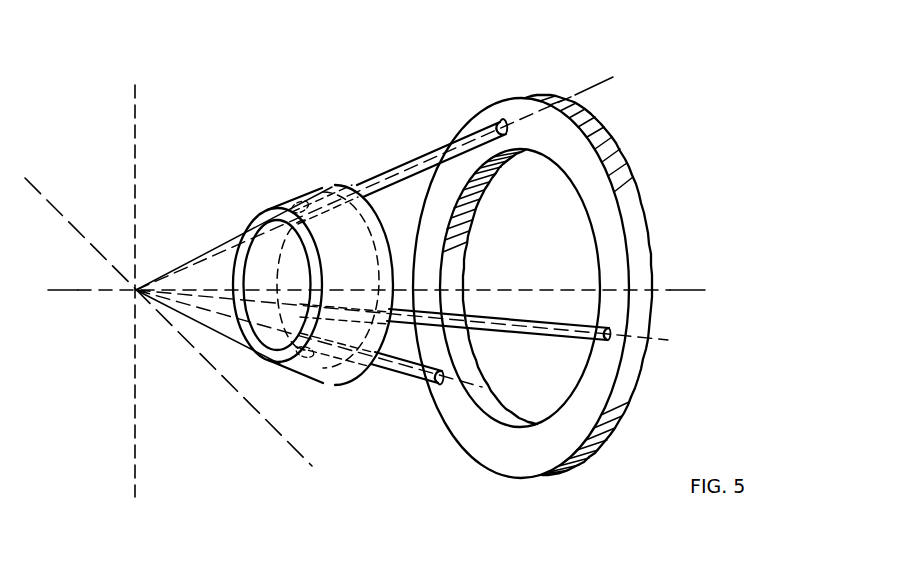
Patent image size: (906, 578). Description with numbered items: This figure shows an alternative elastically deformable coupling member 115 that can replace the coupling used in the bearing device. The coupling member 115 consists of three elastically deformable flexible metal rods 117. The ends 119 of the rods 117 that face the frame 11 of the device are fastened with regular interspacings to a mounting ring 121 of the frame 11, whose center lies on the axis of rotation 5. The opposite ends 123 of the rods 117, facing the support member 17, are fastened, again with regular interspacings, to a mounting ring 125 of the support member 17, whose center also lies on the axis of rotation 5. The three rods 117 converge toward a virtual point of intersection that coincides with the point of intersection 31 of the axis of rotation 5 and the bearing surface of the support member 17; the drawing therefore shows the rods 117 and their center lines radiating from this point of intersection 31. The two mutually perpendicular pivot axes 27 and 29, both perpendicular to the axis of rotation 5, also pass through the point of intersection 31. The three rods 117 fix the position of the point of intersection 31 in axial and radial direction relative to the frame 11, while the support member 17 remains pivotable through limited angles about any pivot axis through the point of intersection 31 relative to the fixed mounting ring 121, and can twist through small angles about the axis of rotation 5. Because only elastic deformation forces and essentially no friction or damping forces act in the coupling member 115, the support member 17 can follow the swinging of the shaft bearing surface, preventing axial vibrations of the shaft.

The axis of rotation 5 is at (78, 287).
The frame 11 is at (627, 200).
The support member 17 is at (243, 230).
The pivot axis 27 is at (138, 120).
The pivot axis 29 is at (67, 214).
The point of intersection 31 is at (134, 293).
The coupling member 115 is at (445, 303).
The flexible metal rods 117 is at (407, 160).
The ends of the rods 119 is at (492, 118).
The mounting ring 121 is at (569, 286).
The ends of the rods 123 is at (322, 190).
The mounting ring 125 is at (279, 285).